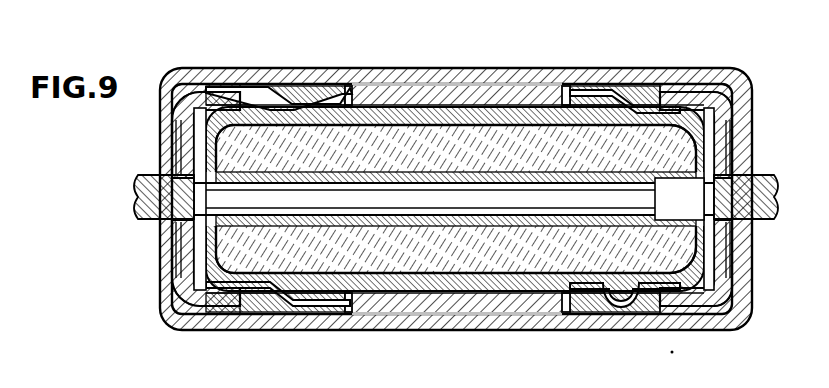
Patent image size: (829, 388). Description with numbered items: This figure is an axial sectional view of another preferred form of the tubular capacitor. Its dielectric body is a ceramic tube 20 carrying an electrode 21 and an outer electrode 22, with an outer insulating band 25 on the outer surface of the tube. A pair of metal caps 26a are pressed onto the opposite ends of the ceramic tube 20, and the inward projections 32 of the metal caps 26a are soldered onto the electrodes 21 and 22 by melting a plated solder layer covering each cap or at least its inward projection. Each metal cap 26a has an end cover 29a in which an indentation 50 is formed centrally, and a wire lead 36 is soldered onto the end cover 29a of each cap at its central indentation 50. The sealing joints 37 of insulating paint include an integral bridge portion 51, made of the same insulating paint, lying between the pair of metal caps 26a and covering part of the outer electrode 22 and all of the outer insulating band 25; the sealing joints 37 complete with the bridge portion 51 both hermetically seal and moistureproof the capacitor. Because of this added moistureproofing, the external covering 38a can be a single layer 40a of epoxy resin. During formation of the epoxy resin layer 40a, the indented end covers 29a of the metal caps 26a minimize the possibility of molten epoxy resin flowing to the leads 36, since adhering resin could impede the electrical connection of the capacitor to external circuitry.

The ceramic tube 20 is at (650, 140).
The electrode 21 is at (575, 222).
The outer electrode 22 is at (593, 117).
The outer insulating band 25 is at (384, 103).
The metal cap 26a is at (175, 86).
The end cover 29a is at (165, 283).
The inward projection 32 is at (291, 306).
The wire lead 36 is at (147, 214).
The sealing joint 37 is at (341, 88).
The external covering 38a is at (202, 60).
The epoxy resin layer 40a is at (505, 80).
The indentation 50 is at (172, 167).
The bridge portion 51 is at (451, 106).